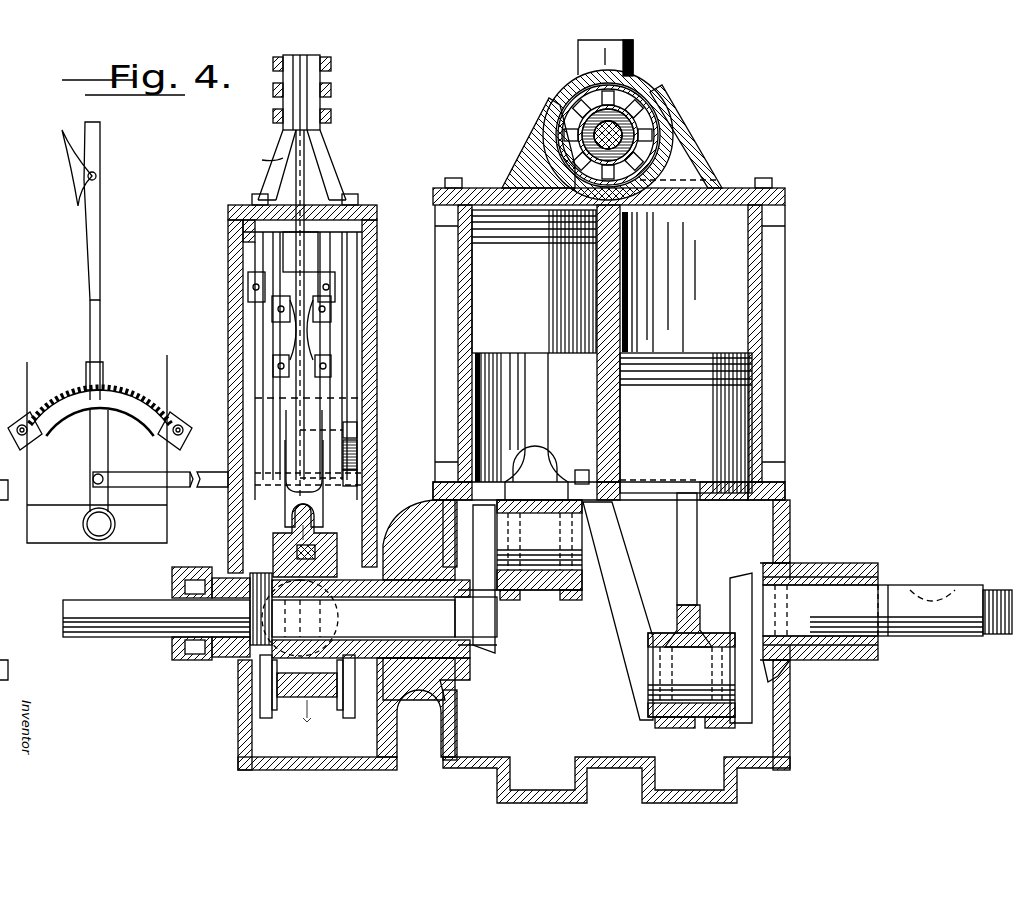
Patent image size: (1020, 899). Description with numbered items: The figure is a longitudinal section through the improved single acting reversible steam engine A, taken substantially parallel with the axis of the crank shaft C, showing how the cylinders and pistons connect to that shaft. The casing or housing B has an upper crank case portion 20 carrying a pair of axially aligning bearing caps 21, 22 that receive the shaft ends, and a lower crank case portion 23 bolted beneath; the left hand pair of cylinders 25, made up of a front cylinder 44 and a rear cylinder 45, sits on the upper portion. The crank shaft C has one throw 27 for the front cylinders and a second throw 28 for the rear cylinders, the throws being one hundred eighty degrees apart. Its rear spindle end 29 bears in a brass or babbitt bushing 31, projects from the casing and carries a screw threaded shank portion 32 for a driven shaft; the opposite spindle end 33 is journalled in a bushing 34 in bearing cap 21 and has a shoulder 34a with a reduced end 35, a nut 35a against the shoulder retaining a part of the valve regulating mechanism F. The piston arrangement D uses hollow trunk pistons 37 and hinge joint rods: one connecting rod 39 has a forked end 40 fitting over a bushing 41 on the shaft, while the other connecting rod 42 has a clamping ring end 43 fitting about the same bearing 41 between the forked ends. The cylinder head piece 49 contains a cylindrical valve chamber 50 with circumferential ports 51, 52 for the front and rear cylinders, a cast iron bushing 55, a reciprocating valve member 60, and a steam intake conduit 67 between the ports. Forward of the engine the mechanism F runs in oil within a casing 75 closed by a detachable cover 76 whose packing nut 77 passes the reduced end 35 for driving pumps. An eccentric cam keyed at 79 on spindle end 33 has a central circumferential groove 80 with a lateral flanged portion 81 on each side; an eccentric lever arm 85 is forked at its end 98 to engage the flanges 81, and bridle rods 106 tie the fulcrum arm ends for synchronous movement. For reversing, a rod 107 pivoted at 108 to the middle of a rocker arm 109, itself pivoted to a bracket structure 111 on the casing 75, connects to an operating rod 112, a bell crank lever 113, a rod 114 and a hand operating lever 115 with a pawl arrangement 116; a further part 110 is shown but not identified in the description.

The single acting reversible steam engine A is at (760, 236).
The casing or housing B is at (455, 765).
The crank shaft C is at (630, 640).
The piston arrangement D is at (760, 440).
The valve regulating mechanism F is at (240, 325).
The upper crank case portion 20 is at (790, 520).
The bearing cap 21 is at (465, 665).
The bearing cap 22 is at (820, 565).
The lower crank case portion 23 is at (790, 740).
The left hand pair of cylinders 25 is at (778, 317).
The throw 27 is at (535, 575).
The second throw 28 is at (682, 640).
The spindle end 29 is at (870, 598).
The bushing 31 is at (880, 660).
The screw threaded shank portion 32 is at (990, 595).
The spindle end 33 is at (405, 600).
The bushing 34 is at (478, 655).
The shoulder 34a is at (252, 585).
The reduced end 35 is at (132, 610).
The nut 35a is at (250, 660).
The piston 37 is at (760, 395).
The connecting rod 39 is at (480, 445).
The forked end 40 is at (578, 485).
The bushing 41 is at (650, 735).
The connecting rod 42 is at (693, 560).
The clamping ring end 43 is at (690, 728).
The front cylinder 44 is at (500, 370).
The rear cylinder 45 is at (757, 265).
The cylinder head piece 49 is at (715, 172).
The valve chamber 50 is at (660, 112).
The circumferential port 51 is at (540, 150).
The circumferential port 52 is at (700, 150).
The cast iron bushing 55 is at (690, 118).
The valve member 60 is at (570, 137).
The steam intake conduit 67 is at (590, 58).
The casing 75 is at (282, 775).
The detachable cover 76 is at (232, 503).
The packing nut 77 is at (180, 582).
The key 79 is at (312, 562).
The central circumferential groove 80 is at (300, 715).
The lateral flanged portion 81 is at (335, 715).
The eccentric lever arm 85 is at (320, 725).
The forked end 98 is at (282, 513).
The bridle rod 106 is at (397, 712).
The rod 107 is at (300, 165).
The pivot connection 108 is at (330, 98).
The rocker arm 109 is at (300, 60).
The lock nut 110 is at (330, 120).
The bracket structure 111 is at (259, 159).
The operating rod 112 is at (226, 395).
The bell crank lever 113 is at (368, 410).
The rod 114 is at (185, 480).
The hand operating lever 115 is at (95, 238).
The pawl arrangement 116 is at (105, 385).